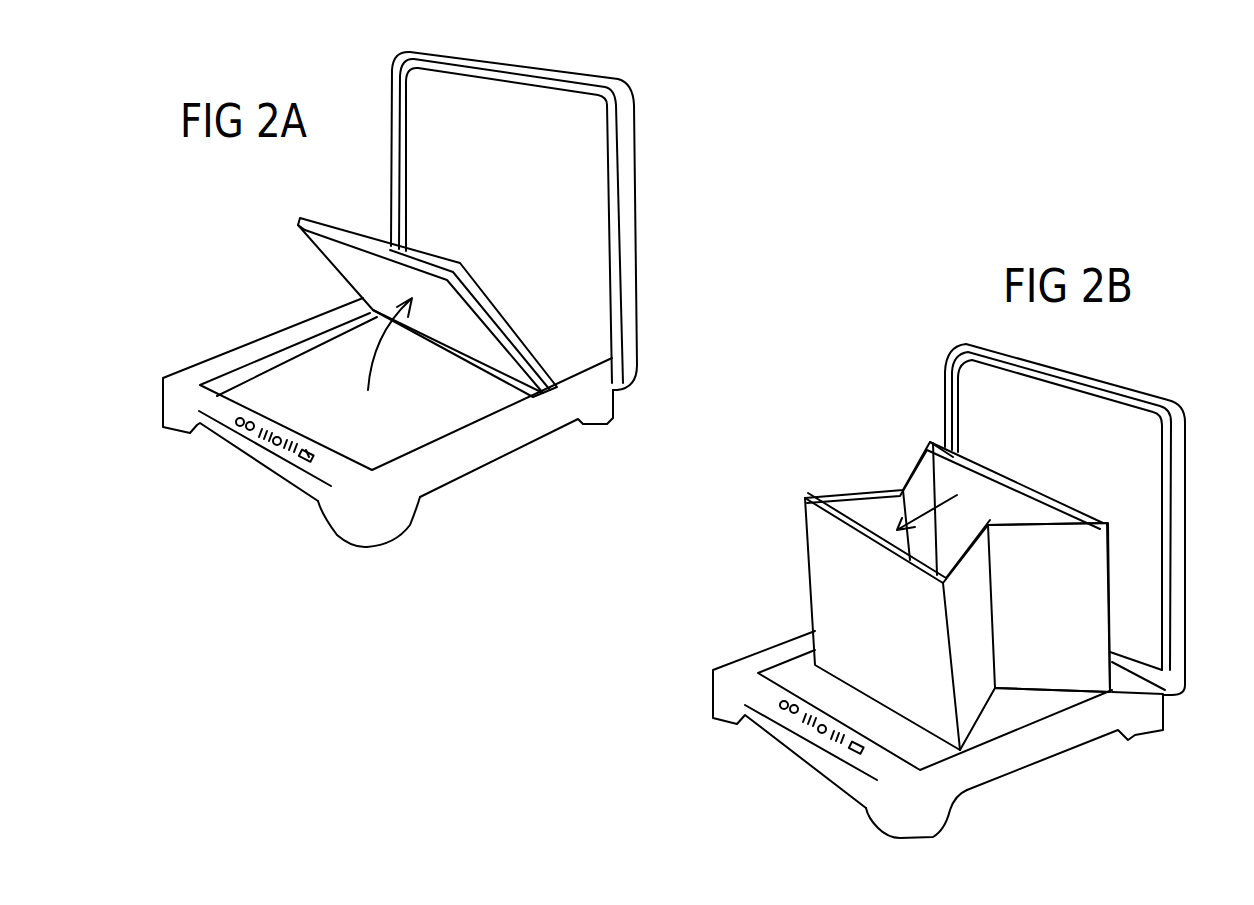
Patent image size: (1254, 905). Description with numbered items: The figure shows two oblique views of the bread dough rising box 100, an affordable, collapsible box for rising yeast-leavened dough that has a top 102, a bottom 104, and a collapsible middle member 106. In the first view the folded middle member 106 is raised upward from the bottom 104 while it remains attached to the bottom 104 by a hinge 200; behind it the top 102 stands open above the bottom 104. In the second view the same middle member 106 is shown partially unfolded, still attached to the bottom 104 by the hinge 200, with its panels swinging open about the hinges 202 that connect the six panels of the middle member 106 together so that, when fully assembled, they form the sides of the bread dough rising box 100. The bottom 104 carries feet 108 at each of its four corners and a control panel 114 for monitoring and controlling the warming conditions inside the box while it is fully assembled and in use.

In FIG. 2A, the bread dough rising box 100 is at (714, 204).
In FIG. 2B, the bread dough rising box 100 is at (945, 311).
In FIG. 2A, the top 102 is at (637, 142).
In FIG. 2B, the top 102 is at (1065, 519).
In FIG. 2A, the bottom 104 is at (498, 460).
In FIG. 2B, the bottom 104 is at (1044, 763).
In FIG. 2A, the middle member 106 is at (370, 232).
In FIG. 2B, the middle member 106 is at (860, 492).
In FIG. 2A, the feet 108 is at (377, 547).
In FIG. 2B, the feet 108 is at (943, 832).
In FIG. 2A, the control panel 114 is at (272, 464).
In FIG. 2B, the control panel 114 is at (808, 745).
In FIG. 2A, the hinge 200 is at (558, 378).
In FIG. 2B, the hinge 200 is at (1123, 673).
In FIG. 2B, the hinges 202 is at (1000, 615).